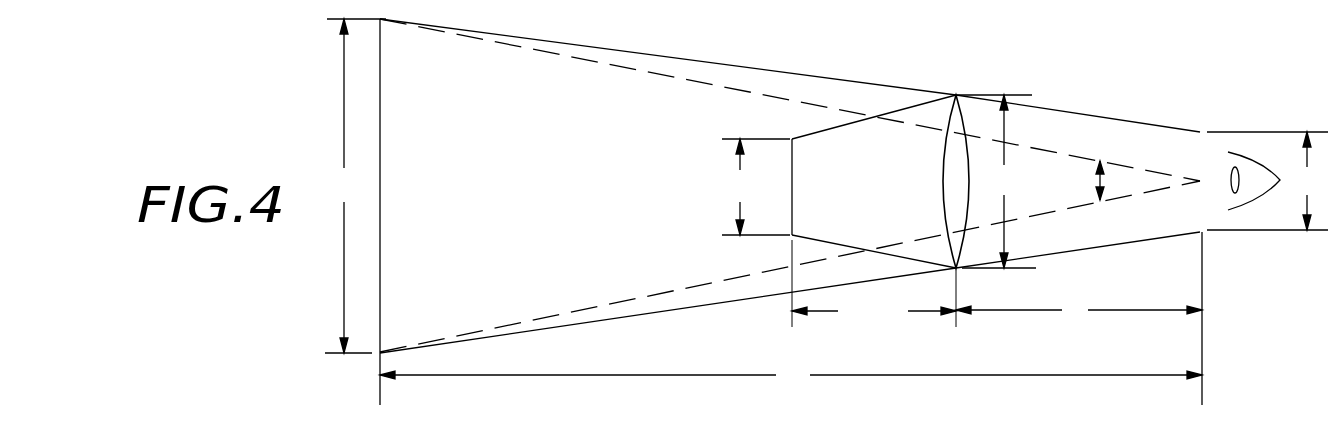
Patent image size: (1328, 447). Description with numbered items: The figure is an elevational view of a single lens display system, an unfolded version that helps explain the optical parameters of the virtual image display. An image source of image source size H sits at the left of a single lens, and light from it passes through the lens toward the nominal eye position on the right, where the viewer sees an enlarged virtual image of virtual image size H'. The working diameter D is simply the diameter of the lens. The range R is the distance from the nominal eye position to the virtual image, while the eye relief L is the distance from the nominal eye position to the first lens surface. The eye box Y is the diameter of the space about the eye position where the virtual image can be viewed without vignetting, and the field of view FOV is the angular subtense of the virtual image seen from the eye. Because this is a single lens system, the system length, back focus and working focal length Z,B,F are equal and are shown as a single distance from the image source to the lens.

The virtual image size H' is at (343, 186).
The image source size H is at (756, 187).
The working diameter D is at (996, 181).
The field of view FOV is at (1123, 180).
The eye box Y is at (1305, 181).
The system length, back focus and working focal length Z,B,F is at (874, 313).
The eye relief L is at (1079, 311).
The range R is at (791, 376).